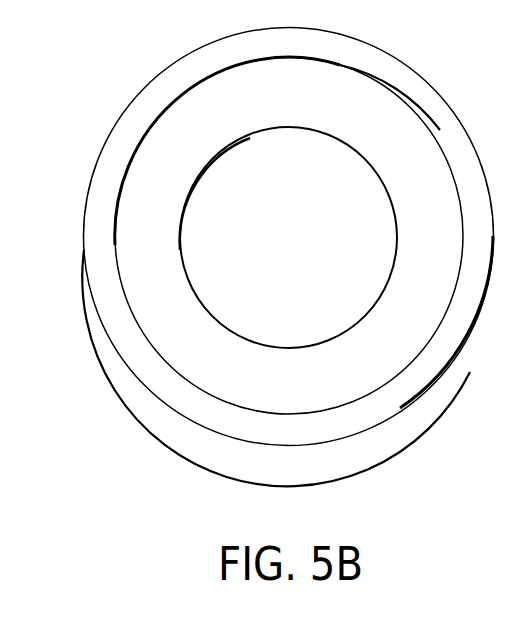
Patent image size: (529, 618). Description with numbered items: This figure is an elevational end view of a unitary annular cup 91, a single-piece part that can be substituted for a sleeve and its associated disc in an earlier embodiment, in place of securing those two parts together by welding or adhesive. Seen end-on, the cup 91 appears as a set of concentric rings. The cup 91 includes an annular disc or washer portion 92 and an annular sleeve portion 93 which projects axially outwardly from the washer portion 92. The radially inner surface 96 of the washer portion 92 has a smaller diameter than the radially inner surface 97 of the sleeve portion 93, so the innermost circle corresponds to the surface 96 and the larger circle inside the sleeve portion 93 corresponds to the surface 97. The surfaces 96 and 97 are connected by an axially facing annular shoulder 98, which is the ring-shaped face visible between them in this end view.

The unitary annular cup 91 is at (134, 90).
The washer portion 92 is at (368, 143).
The sleeve portion 93 is at (97, 206).
The radially inner surface of the washer portion 96 is at (396, 258).
The radially inner surface of the sleeve portion 97 is at (452, 183).
The annular shoulder 98 is at (367, 93).